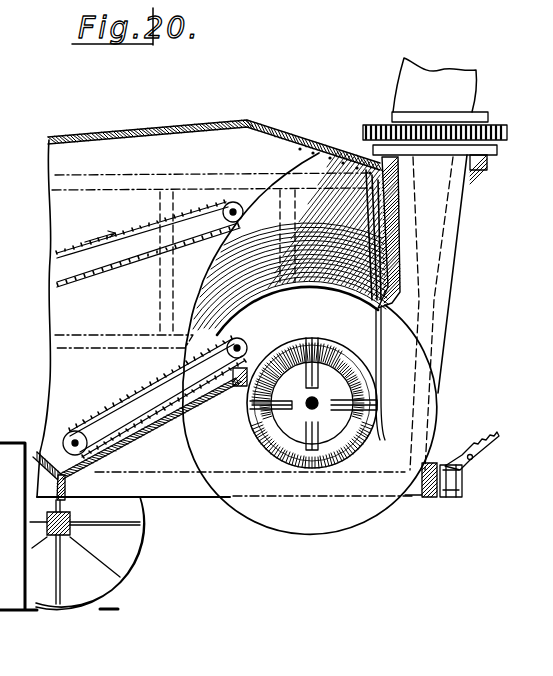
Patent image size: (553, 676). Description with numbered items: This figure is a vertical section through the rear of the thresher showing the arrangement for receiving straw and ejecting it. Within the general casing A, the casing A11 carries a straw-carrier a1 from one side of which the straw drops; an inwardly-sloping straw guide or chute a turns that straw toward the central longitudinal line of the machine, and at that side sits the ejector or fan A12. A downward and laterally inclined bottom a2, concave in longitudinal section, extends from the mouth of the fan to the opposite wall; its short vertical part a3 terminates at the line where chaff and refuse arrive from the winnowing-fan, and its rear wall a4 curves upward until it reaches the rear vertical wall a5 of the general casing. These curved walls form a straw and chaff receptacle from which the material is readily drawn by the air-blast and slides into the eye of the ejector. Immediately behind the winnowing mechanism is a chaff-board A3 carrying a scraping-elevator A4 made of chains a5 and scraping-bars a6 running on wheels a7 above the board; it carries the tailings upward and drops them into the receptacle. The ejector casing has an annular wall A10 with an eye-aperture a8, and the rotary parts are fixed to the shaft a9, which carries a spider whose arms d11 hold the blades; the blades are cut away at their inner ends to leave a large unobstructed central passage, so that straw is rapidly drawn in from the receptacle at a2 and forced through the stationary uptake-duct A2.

The general casing A is at (217, 308).
The casing A11 is at (173, 154).
The straw-carrier a1 is at (149, 243).
The straw guide or chute a is at (290, 241).
The inclined chute or bottom a2 is at (273, 452).
The annular wall A10 is at (297, 311).
The eye-aperture a8 is at (287, 343).
The spider arms d11 is at (312, 403).
The ejector or fan A12 is at (322, 402).
The shaft a9 is at (316, 410).
The rear wall a4 is at (380, 323).
The stationary uptake-duct A2 is at (428, 250).
The chains a5 is at (422, 203).
The chaff-board A3 is at (159, 449).
The scraping-bars a6 is at (153, 380).
The scraping-elevator A4 is at (110, 407).
The wheels a7 is at (230, 352).
The short vertical part a3 is at (238, 386).